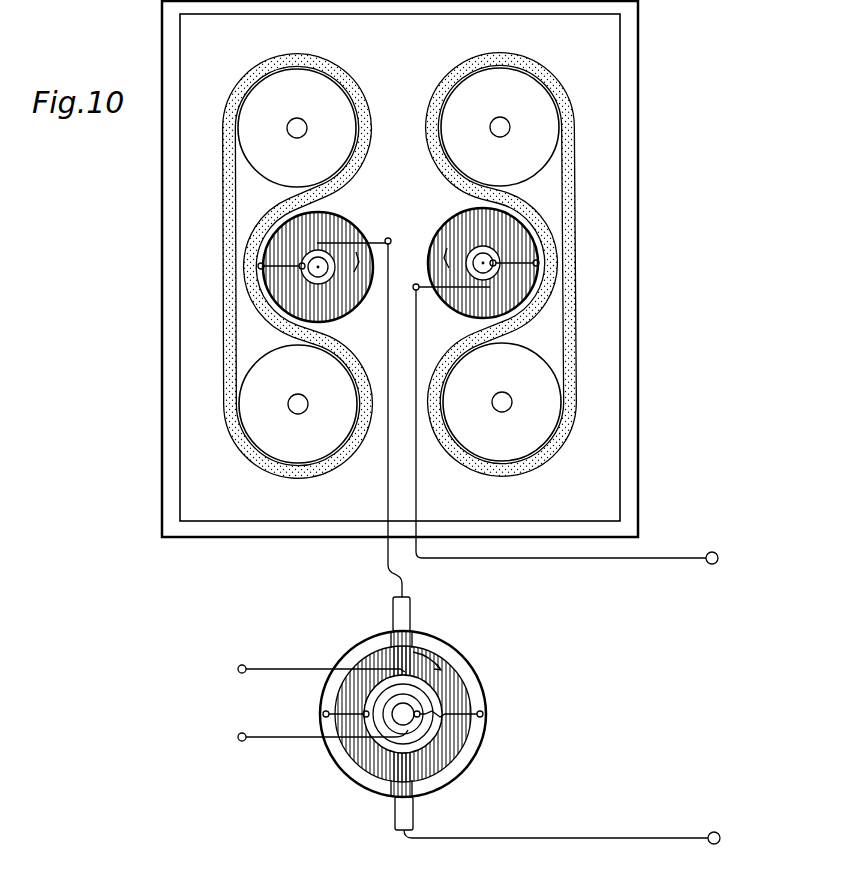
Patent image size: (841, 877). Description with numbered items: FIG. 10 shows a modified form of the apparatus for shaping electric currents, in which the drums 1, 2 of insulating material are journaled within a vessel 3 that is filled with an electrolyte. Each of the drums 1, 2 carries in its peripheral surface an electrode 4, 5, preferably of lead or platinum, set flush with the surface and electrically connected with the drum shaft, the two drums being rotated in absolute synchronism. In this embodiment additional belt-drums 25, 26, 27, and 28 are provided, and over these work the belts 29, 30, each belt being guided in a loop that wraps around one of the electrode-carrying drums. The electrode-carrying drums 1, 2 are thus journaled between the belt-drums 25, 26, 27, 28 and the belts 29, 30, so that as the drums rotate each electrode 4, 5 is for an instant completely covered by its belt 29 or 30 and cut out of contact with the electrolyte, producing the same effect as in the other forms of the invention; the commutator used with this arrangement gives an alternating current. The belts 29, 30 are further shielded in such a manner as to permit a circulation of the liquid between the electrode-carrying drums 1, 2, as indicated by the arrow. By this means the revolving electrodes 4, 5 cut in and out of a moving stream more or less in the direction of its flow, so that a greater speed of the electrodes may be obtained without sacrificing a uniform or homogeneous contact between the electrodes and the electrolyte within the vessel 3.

The drum 1 is at (318, 261).
The drum 2 is at (476, 259).
The vessel 3 is at (620, 438).
The electrode 4 is at (267, 243).
The electrode 5 is at (532, 242).
The belt-drum 25 is at (297, 128).
The belt-drum 26 is at (500, 127).
The belt-drum 27 is at (298, 404).
The belt-drum 28 is at (502, 402).
The belt 29 is at (348, 76).
The belt 30 is at (563, 79).